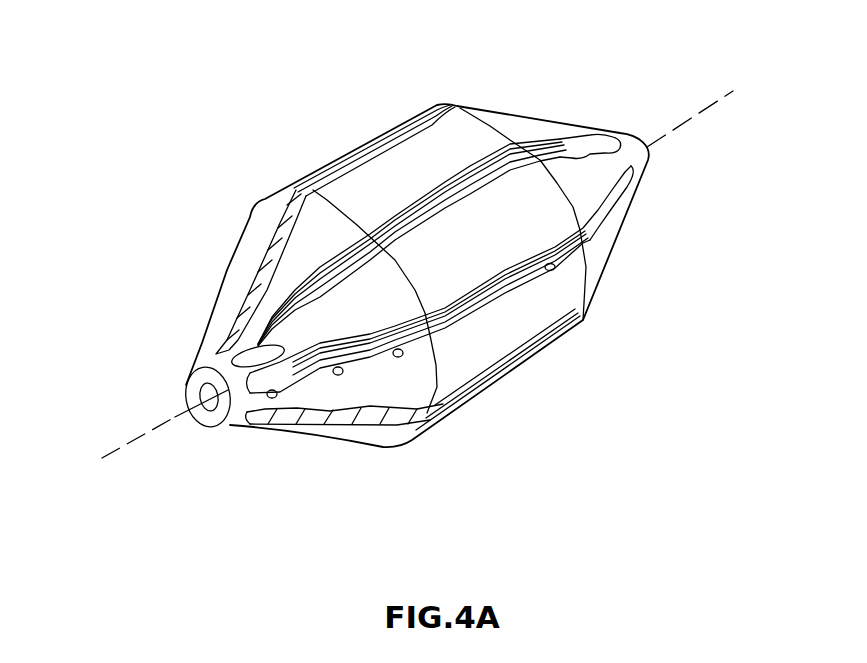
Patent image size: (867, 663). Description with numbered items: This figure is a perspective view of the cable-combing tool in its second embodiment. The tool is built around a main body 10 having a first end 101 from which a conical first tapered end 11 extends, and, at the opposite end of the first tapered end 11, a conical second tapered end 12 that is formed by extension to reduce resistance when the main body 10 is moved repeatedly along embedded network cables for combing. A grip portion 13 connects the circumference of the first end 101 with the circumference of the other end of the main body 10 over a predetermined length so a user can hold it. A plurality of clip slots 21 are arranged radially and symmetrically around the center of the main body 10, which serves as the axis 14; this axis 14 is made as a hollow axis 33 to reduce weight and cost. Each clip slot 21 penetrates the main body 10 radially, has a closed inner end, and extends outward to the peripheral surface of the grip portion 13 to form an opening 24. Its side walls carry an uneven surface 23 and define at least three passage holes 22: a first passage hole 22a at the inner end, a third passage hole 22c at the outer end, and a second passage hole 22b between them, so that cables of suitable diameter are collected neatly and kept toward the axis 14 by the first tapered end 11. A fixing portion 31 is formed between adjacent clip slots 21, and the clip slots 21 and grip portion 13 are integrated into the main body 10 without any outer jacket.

The main body 10 is at (416, 276).
The first tapered end 11 is at (238, 413).
The second tapered end 12 is at (633, 153).
The grip portion 13 is at (335, 215).
The axis 14 is at (186, 432).
The hollow axis 33 is at (228, 413).
The clip slots 21 is at (240, 350).
The passage holes 22 is at (333, 445).
The first passage hole 22a is at (273, 398).
The second passage hole 22b is at (338, 375).
The third passage hole 22c is at (395, 357).
The uneven surface 23 is at (325, 347).
The opening 24 is at (463, 322).
The fixing portion 31 is at (318, 205).
The first end 101 is at (437, 400).